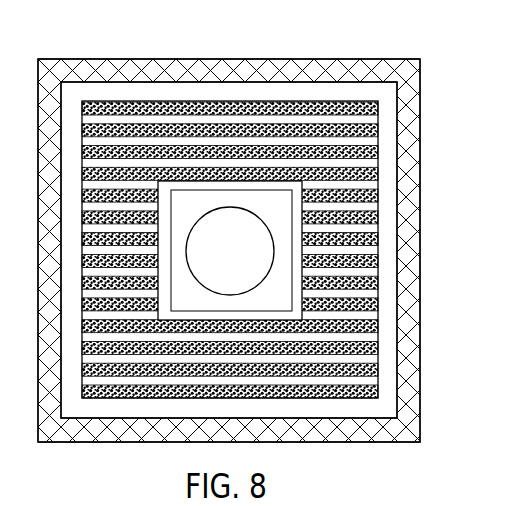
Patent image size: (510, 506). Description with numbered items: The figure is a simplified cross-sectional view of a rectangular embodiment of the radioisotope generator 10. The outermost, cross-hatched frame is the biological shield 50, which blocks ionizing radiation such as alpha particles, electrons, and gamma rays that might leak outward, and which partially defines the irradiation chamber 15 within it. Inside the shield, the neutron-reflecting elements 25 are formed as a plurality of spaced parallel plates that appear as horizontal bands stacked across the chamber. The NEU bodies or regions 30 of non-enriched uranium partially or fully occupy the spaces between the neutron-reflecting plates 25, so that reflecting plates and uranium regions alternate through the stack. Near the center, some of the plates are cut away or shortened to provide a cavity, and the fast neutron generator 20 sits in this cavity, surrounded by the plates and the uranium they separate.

The radioisotope generator 10 is at (229, 268).
The irradiation chamber 15 is at (105, 93).
The fast neutron generator 20 is at (248, 211).
The neutron-reflecting elements 25 is at (251, 214).
The NEU bodies or regions 30 is at (251, 94).
The biological shield 50 is at (313, 101).